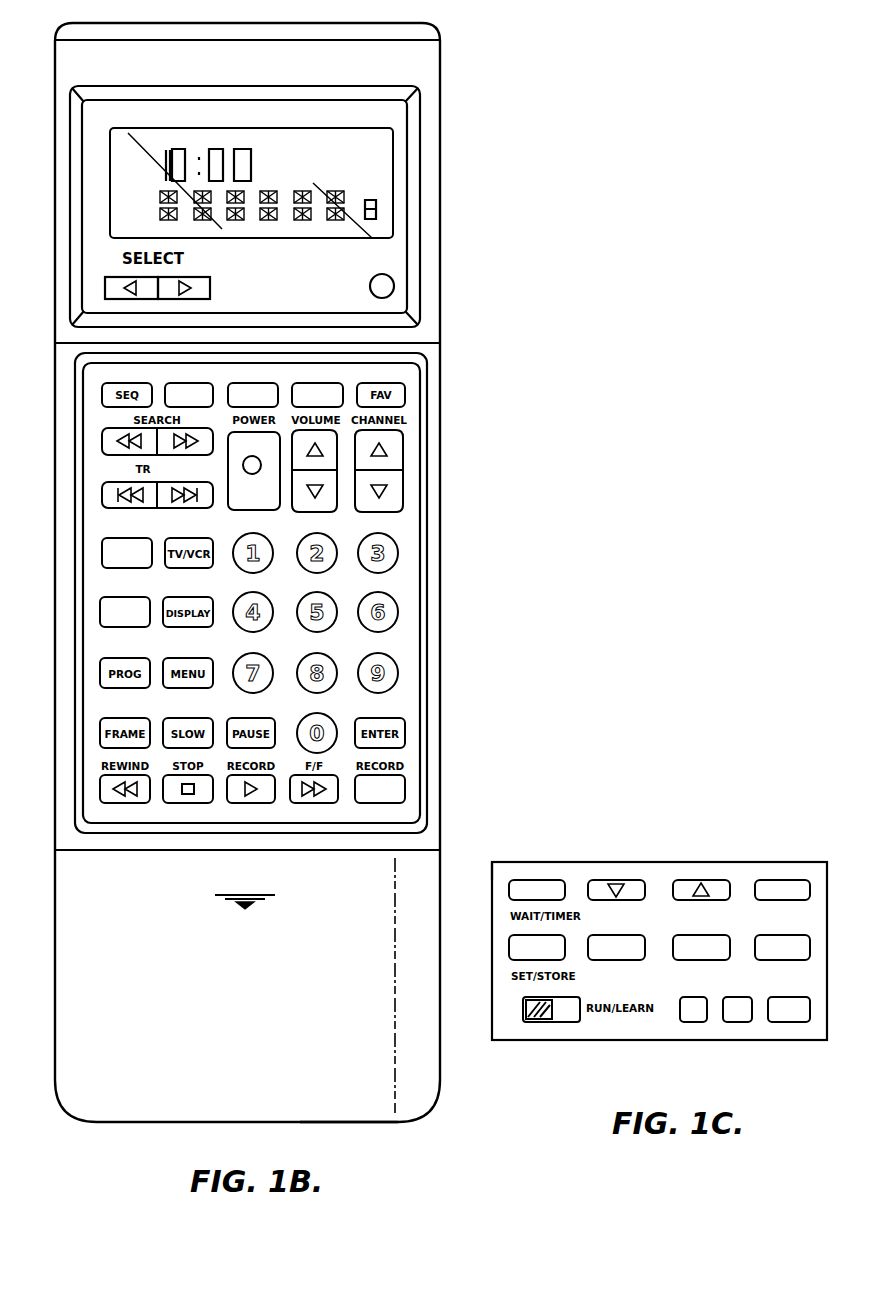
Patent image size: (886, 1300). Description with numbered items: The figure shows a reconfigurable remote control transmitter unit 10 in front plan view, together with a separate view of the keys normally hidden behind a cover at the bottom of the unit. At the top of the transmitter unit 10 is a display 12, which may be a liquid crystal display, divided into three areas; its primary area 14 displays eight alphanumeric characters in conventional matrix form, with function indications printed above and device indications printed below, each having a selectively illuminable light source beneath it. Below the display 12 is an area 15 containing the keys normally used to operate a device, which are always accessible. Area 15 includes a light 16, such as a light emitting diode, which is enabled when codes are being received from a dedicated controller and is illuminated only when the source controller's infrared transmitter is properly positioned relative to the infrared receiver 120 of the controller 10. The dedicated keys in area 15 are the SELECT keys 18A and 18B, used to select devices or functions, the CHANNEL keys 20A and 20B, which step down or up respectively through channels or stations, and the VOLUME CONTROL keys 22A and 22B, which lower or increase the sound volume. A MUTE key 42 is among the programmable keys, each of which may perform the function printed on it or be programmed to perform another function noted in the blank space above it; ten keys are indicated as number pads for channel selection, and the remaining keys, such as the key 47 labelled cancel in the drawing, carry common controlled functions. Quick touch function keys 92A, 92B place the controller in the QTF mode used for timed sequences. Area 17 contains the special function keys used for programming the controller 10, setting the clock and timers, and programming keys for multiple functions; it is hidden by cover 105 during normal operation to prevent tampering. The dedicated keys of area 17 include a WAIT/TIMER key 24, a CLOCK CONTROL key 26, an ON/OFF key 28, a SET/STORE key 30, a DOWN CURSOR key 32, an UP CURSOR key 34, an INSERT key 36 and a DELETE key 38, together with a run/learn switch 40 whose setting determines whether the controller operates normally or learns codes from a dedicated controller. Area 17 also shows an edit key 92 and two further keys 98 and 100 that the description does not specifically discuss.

In FIG. 1B, the transmitter unit 10 is at (528, 403).
In FIG. 1B, the display 12 is at (381, 183).
In FIG. 1B, the primary area 14 is at (163, 206).
In FIG. 1B, the area containing normally accessible keys 15 is at (87, 378).
In FIG. 1B, the light 16 is at (395, 287).
In FIG. 1C, the area containing special function keys 17 is at (499, 868).
In FIG. 1B, the SELECT key 18A is at (105, 287).
In FIG. 1B, the SELECT key 18B is at (158, 280).
In FIG. 1B, the CHANNEL key 20A is at (388, 492).
In FIG. 1B, the CHANNEL key 20B is at (388, 453).
In FIG. 1B, the VOLUME CONTROL key 22A is at (330, 442).
In FIG. 1B, the VOLUME CONTROL key 22B is at (327, 500).
In FIG. 1C, the WAIT/TIMER key 24 is at (528, 880).
In FIG. 1B, the CLOCK CONTROL key 26 is at (102, 612).
In FIG. 1C, the CLOCK CONTROL key 26 is at (810, 1007).
In FIG. 1C, the ON/OFF key 28 is at (810, 947).
In FIG. 1C, the SET/STORE key 30 is at (509, 948).
In FIG. 1C, the DOWN CURSOR key 32 is at (630, 880).
In FIG. 1C, the UP CURSOR key 34 is at (708, 880).
In FIG. 1C, the INSERT key 36 is at (594, 935).
In FIG. 1C, the DELETE key 38 is at (727, 955).
In FIG. 1C, the run/learn switch 40 is at (543, 1022).
In FIG. 1B, the MUTE key 42 is at (102, 554).
In FIG. 1B, the cancel key 47 is at (165, 382).
In FIG. 1C, the edit key 92 is at (800, 880).
In FIG. 1B, the QTF key 92A is at (268, 383).
In FIG. 1B, the QTF key 92B is at (337, 383).
In FIG. 1C, the yes key 98 is at (692, 1022).
In FIG. 1C, the no key 100 is at (738, 1022).
In FIG. 1B, the cover 105 is at (85, 1022).
In FIG. 1C, the cover 105 is at (808, 915).
In FIG. 1B, the I/R receiver 120 is at (322, 1122).